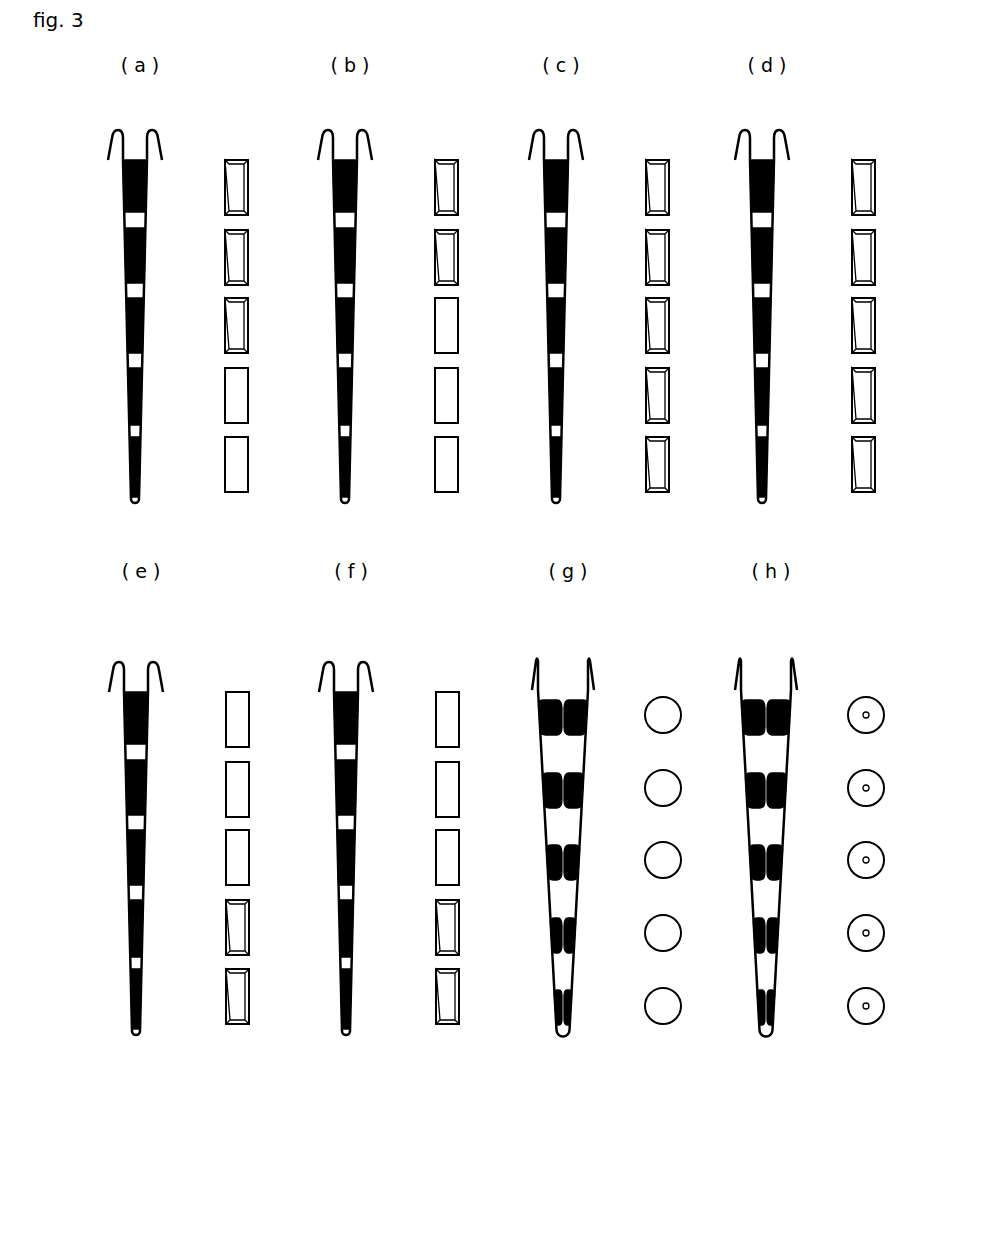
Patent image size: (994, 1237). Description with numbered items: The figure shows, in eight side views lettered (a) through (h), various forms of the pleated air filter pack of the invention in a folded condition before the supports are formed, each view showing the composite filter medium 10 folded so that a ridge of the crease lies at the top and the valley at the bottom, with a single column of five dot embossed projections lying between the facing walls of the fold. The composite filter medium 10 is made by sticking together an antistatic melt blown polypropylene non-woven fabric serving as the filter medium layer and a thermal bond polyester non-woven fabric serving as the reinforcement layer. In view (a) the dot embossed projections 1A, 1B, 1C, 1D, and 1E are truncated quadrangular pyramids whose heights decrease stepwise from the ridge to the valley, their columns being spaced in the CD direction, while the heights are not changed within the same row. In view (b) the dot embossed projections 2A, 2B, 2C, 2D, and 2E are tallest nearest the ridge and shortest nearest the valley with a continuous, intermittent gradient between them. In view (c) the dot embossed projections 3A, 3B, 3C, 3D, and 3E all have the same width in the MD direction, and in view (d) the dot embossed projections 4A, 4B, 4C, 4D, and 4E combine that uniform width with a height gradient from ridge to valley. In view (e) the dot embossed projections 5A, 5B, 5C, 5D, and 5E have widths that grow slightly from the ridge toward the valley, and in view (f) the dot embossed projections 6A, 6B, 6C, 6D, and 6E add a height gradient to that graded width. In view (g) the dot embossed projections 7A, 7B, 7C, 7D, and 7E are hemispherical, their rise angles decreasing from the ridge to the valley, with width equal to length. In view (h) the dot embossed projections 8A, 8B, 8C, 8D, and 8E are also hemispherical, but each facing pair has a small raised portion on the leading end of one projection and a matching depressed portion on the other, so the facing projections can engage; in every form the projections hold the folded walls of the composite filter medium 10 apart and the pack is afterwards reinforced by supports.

The composite filter medium 10 is at (437, 583).
The dot embossed projection 1A is at (185, 196).
The dot embossed projection 1B is at (186, 265).
The dot embossed projection 1C is at (187, 339).
The dot embossed projection 1D is at (188, 405).
The dot embossed projection 1E is at (189, 477).
The dot embossed projection 2A is at (395, 193).
The dot embossed projection 2B is at (396, 265).
The dot embossed projection 2C is at (397, 332).
The dot embossed projection 2D is at (398, 402).
The dot embossed projection 2E is at (399, 468).
The dot embossed projection 3A is at (606, 195).
The dot embossed projection 3B is at (607, 262).
The dot embossed projection 3C is at (608, 337).
The dot embossed projection 3D is at (609, 405).
The dot embossed projection 3E is at (610, 476).
The dot embossed projection 4A is at (812, 190).
The dot embossed projection 4B is at (813, 259).
The dot embossed projection 4C is at (814, 330).
The dot embossed projection 4D is at (815, 403).
The dot embossed projection 4E is at (816, 472).
The dot embossed projection 5A is at (186, 728).
The dot embossed projection 5B is at (187, 796).
The dot embossed projection 5C is at (188, 872).
The dot embossed projection 5D is at (189, 938).
The dot embossed projection 5E is at (190, 1012).
The dot embossed projection 6A is at (396, 723).
The dot embossed projection 6B is at (397, 796).
The dot embossed projection 6C is at (398, 864).
The dot embossed projection 6D is at (399, 936).
The dot embossed projection 6E is at (400, 1002).
The dot embossed projection 7A is at (610, 730).
The dot embossed projection 7B is at (612, 804).
The dot embossed projection 7C is at (613, 876).
The dot embossed projection 7D is at (615, 947).
The dot embossed projection 7E is at (617, 1021).
The dot embossed projection 8A is at (813, 729).
The dot embossed projection 8B is at (815, 804).
The dot embossed projection 8C is at (816, 873).
The dot embossed projection 8D is at (818, 946).
The dot embossed projection 8E is at (820, 1019).